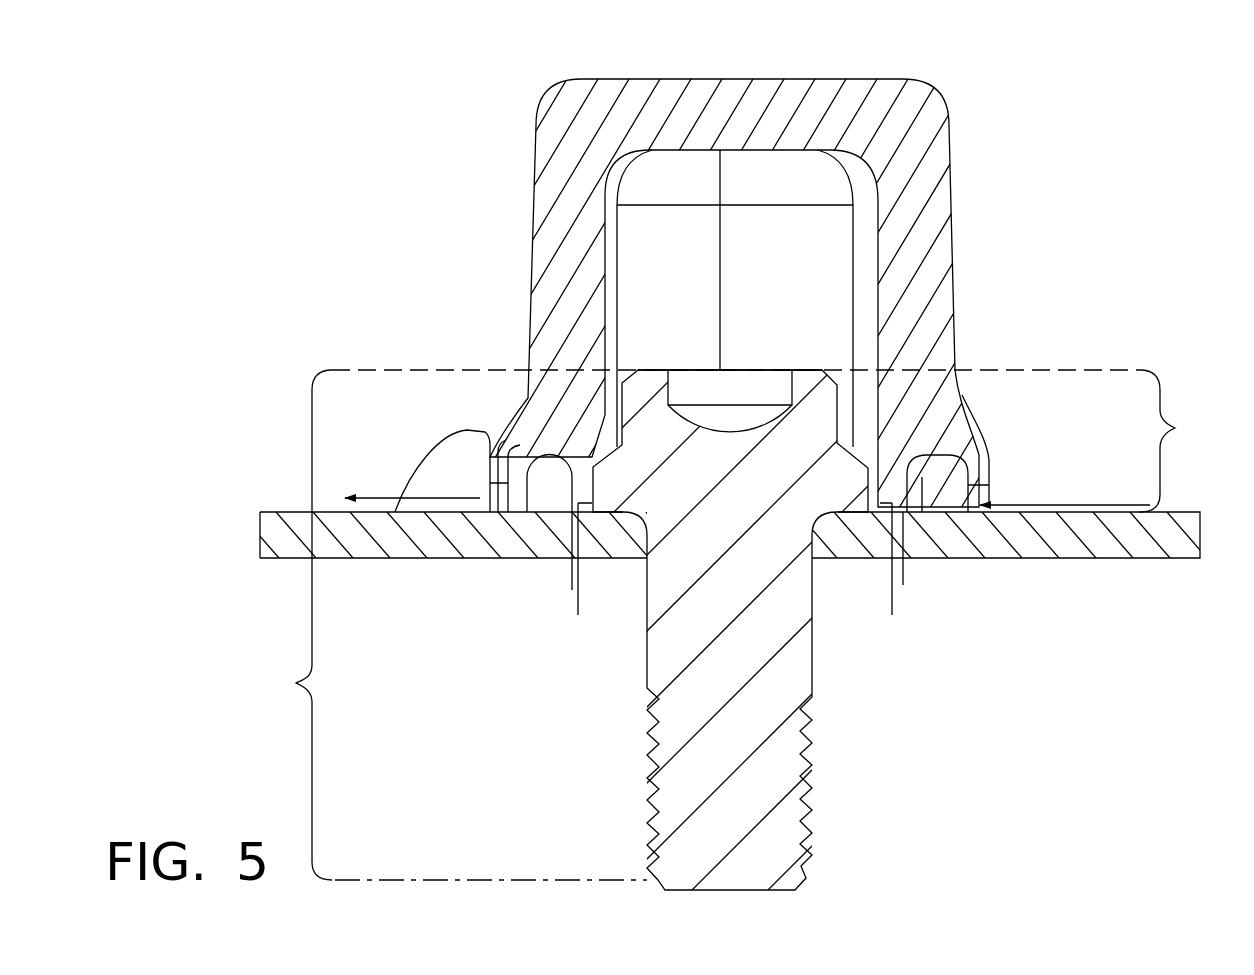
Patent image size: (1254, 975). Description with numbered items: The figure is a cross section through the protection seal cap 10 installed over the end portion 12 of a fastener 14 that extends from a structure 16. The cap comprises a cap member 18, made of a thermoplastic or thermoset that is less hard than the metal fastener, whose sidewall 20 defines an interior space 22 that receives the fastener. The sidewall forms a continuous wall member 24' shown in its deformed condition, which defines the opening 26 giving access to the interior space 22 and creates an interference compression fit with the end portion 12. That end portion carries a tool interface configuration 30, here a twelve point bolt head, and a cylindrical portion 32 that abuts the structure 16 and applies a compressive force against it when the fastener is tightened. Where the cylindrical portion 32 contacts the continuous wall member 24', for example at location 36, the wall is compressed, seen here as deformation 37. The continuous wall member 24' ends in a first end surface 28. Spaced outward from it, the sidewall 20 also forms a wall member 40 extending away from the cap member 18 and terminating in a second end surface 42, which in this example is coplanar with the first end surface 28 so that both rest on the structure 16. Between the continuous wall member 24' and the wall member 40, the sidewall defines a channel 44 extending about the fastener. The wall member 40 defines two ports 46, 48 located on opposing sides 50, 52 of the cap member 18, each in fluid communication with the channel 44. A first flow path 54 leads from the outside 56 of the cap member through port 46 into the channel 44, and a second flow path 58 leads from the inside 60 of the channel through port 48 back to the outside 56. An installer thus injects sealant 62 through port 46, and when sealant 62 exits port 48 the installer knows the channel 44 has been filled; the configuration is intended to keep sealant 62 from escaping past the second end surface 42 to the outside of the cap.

The protection seal cap 10 is at (935, 55).
The end portion of fastener 12 is at (1175, 428).
The fastener 14 is at (296, 683).
The structure 16 is at (292, 512).
The cap member 18 is at (960, 192).
The sidewall 20 is at (580, 212).
The interior space 22 is at (752, 257).
The continuous wall member in deformed condition 24' is at (740, 573).
The opening 26 is at (612, 528).
The first end surface 28 is at (572, 590).
The tool interface configuration 30 is at (816, 406).
The cylindrical portion 32 is at (860, 494).
The location 36 is at (521, 445).
The deformation 37 is at (586, 449).
The wall member 40 is at (494, 436).
The second end surface 42 is at (490, 515).
The channel 44 is at (520, 445).
The port 46 is at (1010, 470).
The port 48 is at (470, 481).
The side of cap member 50 is at (1078, 362).
The side of cap member 52 is at (385, 362).
The first flow path 54 is at (1062, 512).
The outside of cap member 56 is at (465, 297).
The second flow path 58 is at (393, 497).
The inside of channel 60 is at (534, 501).
The sealant 62 is at (441, 438).